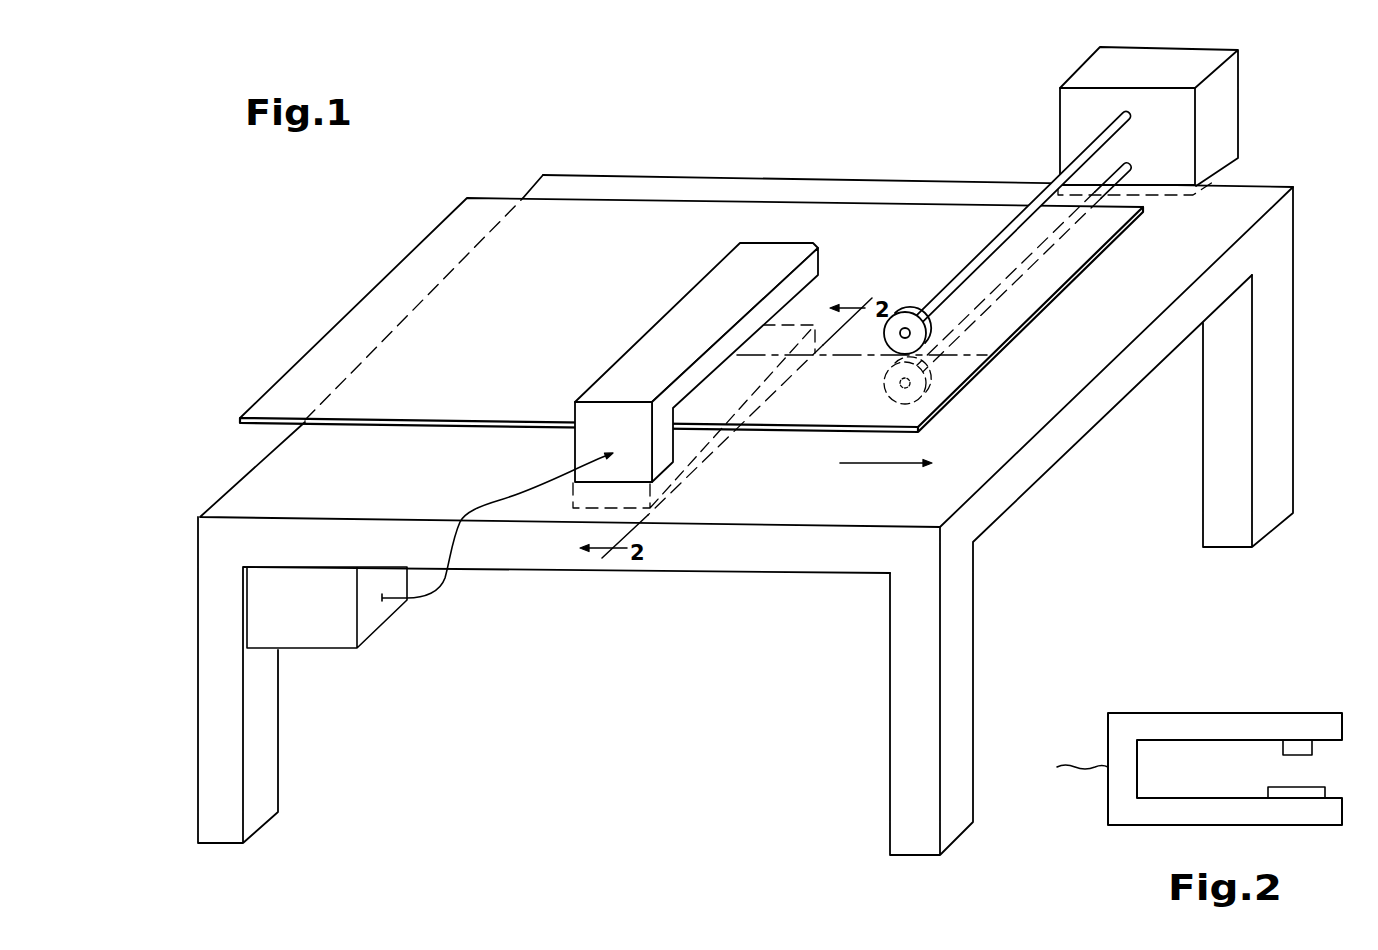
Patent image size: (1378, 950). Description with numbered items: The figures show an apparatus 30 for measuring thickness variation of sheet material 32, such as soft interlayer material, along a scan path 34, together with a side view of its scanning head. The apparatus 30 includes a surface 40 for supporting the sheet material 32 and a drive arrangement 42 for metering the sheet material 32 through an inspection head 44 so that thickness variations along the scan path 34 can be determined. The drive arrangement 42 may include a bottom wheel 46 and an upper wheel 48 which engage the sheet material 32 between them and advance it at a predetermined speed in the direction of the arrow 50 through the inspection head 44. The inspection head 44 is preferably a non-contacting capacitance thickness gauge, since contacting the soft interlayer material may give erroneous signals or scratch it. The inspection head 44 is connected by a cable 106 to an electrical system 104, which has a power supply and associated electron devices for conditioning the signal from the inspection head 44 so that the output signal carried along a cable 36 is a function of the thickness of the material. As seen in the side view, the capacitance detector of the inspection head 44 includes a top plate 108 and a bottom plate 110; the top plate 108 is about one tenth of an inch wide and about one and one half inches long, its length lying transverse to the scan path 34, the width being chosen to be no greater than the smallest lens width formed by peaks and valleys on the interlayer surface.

In FIG. 1, the apparatus 30 is at (1275, 173).
In FIG. 1, the sheet material 32 is at (891, 197).
In FIG. 1, the scan path 34 is at (861, 358).
In FIG. 1, the cable 36 is at (328, 633).
In FIG. 1, the surface 40 is at (1198, 256).
In FIG. 1, the drive arrangement 42 is at (1243, 107).
In FIG. 1, the inspection head 44 is at (587, 375).
In FIG. 2, the inspection head 44 is at (1151, 699).
In FIG. 1, the bottom wheel 46 is at (893, 401).
In FIG. 1, the upper wheel 48 is at (906, 322).
In FIG. 1, the arrow 50 is at (880, 465).
In FIG. 1, the electrical system 104 is at (317, 610).
In FIG. 1, the cable 106 is at (512, 495).
In FIG. 2, the cable 106 is at (1082, 765).
In FIG. 2, the top plate 108 is at (1312, 750).
In FIG. 2, the bottom plate 110 is at (1270, 793).